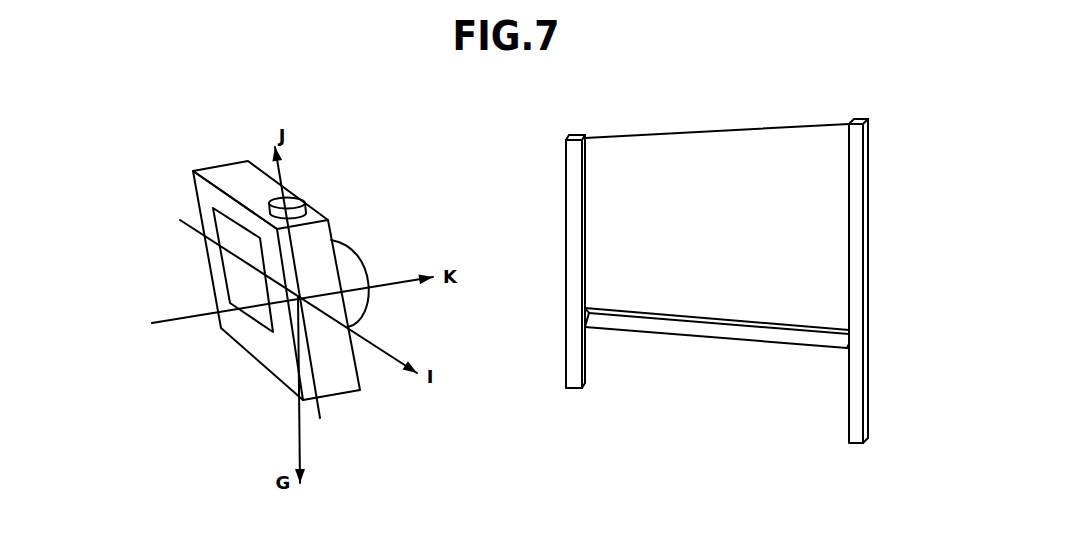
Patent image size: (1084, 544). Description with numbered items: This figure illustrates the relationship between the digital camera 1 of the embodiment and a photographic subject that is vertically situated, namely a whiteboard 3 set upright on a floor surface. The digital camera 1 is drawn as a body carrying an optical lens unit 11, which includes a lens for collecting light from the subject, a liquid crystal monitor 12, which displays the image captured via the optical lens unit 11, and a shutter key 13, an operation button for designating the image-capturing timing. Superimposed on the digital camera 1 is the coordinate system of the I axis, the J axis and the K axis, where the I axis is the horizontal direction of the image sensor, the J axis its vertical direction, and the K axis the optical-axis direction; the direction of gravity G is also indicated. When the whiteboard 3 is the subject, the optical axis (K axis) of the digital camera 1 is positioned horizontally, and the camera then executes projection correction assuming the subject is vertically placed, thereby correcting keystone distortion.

The digital camera 1 is at (185, 180).
The optical lens unit 11 is at (356, 247).
The liquid crystal monitor 12 is at (260, 323).
The shutter key 13 is at (296, 196).
The whiteboard 3 is at (708, 138).